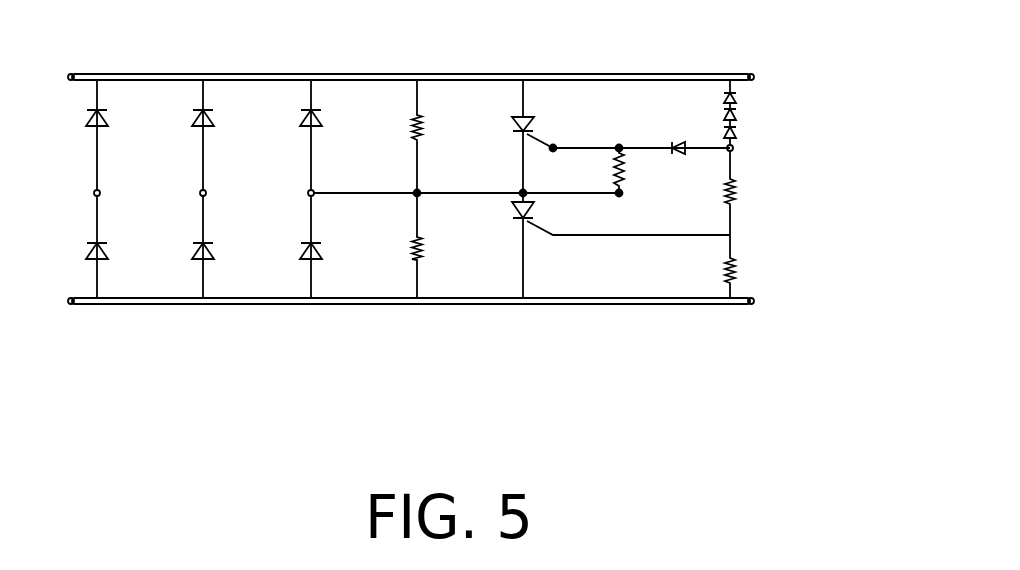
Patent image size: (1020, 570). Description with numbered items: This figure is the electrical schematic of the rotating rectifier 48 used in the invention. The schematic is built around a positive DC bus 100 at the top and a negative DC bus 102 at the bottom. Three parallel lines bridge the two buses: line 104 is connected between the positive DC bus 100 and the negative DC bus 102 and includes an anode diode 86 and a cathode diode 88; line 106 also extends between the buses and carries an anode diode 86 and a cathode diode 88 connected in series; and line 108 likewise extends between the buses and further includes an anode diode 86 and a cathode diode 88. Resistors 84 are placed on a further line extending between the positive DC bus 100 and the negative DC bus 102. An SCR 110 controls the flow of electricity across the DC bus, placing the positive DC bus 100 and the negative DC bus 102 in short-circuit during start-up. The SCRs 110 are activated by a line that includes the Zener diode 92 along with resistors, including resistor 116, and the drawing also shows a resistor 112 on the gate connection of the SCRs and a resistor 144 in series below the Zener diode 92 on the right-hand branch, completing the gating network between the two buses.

The rotating rectifier 48 is at (812, 91).
The positive DC bus 100 is at (478, 73).
The negative DC bus 102 is at (550, 304).
The line 104 is at (99, 165).
The line 106 is at (205, 160).
The line 108 is at (313, 165).
The anode diode 86 is at (87, 127).
The cathode diode 88 is at (87, 257).
The resistors 84 is at (421, 133).
The SCR 110 is at (533, 121).
The resistor 112 is at (623, 168).
The Zener diode 92 is at (737, 113).
The resistor 144 is at (737, 158).
The resistor 116 is at (737, 262).